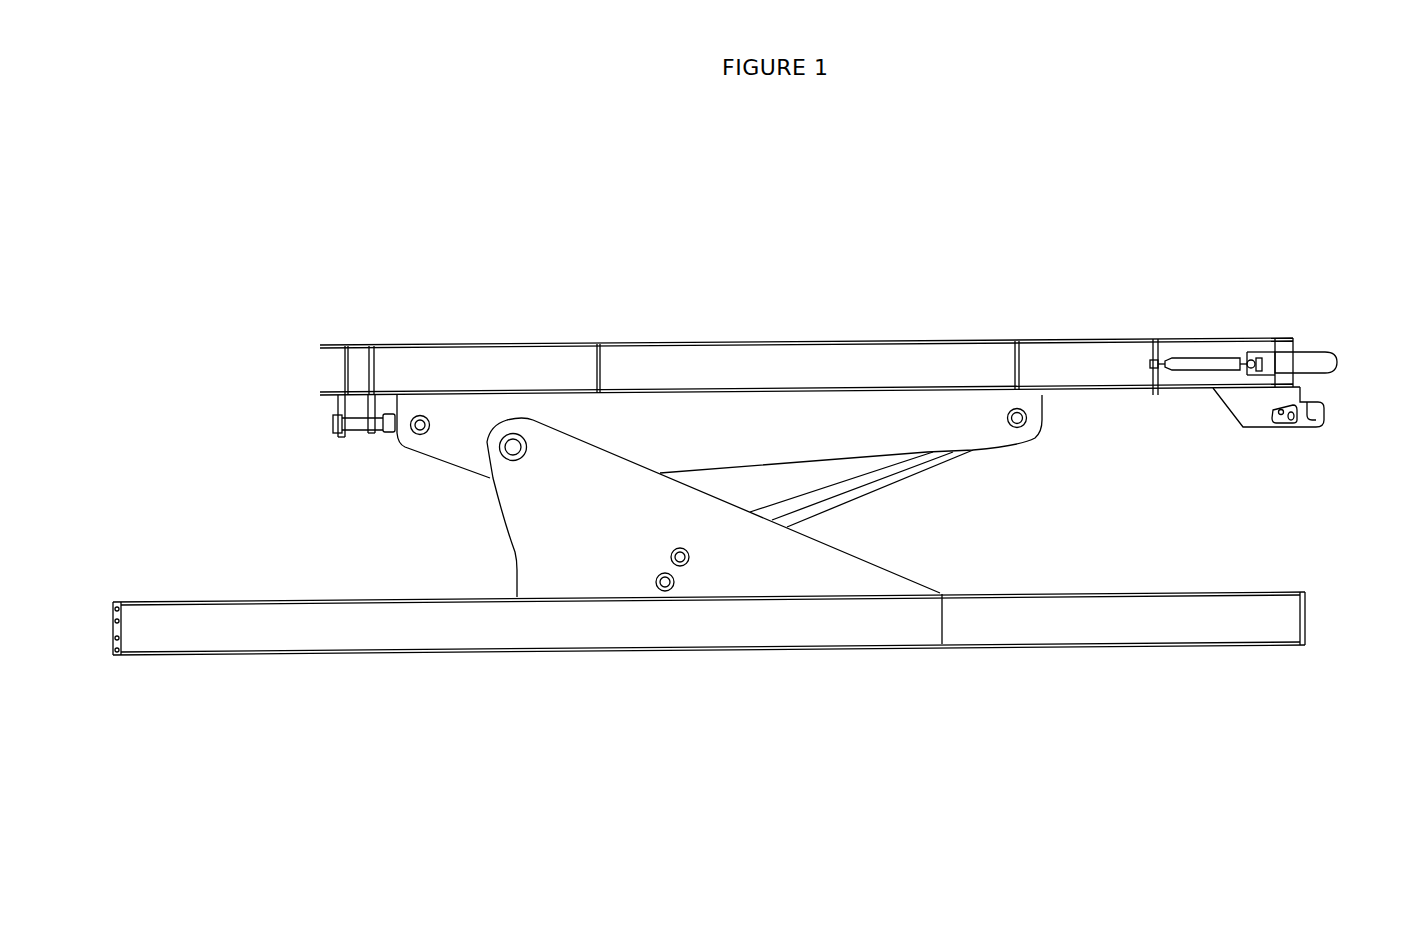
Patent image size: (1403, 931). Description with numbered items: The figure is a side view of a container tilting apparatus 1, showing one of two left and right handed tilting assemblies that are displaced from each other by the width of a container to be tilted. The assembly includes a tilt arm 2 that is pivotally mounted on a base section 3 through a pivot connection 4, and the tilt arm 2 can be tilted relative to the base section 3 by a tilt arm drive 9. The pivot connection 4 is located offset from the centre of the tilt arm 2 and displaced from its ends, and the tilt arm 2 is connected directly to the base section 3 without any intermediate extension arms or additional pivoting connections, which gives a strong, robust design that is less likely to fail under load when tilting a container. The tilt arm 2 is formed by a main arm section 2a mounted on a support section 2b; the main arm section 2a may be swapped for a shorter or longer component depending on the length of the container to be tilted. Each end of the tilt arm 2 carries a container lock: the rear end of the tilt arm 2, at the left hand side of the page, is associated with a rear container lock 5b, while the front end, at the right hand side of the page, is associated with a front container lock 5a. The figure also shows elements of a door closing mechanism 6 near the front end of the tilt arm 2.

The container tilting apparatus 1 is at (280, 260).
The tilt arm 2 is at (945, 312).
The main arm section 2a is at (1153, 338).
The support section 2b is at (723, 412).
The base section 3 is at (1105, 583).
The pivot connection 4 is at (503, 452).
The front container lock 5a is at (1327, 420).
The rear container lock 5b is at (320, 417).
The door closing mechanism 6 is at (1230, 348).
The tilt arm drive 9 is at (885, 495).